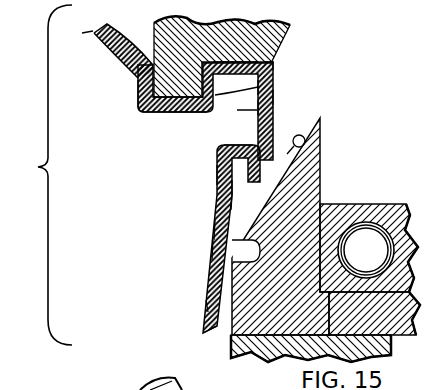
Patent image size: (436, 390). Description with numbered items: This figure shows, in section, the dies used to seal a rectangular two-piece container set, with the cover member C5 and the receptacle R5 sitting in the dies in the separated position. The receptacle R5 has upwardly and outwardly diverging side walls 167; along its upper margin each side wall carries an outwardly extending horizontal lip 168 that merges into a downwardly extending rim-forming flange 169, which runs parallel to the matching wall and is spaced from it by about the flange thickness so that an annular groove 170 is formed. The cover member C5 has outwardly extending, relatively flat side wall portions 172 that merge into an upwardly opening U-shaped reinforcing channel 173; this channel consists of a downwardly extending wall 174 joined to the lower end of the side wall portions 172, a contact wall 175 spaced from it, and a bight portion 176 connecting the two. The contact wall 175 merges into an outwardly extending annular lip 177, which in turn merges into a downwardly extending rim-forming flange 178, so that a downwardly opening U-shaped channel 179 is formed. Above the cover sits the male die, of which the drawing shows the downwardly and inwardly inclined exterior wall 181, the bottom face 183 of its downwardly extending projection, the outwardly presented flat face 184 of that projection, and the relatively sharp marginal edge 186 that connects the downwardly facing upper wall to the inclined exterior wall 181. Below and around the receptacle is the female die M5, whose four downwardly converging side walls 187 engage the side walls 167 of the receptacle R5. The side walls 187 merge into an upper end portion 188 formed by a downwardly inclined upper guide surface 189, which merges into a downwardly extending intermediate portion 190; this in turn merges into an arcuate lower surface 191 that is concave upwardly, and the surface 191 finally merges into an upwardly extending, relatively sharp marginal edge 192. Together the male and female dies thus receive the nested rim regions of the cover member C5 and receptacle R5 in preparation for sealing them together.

The side walls 167 is at (210, 272).
The horizontal lips 168 is at (232, 148).
The rim-forming flanges 169 is at (221, 190).
The annular groove 170 is at (217, 175).
The side wall portions 172 is at (128, 53).
The reinforcing channels 173 is at (140, 101).
The downwardly extending wall 174 is at (137, 86).
The contact wall 175 is at (275, 90).
The bight portion 176 is at (150, 113).
The annular lip 177 is at (274, 70).
The rim-forming flange 178 is at (276, 101).
The U-shaped channel 179 is at (276, 98).
The exterior wall 181 is at (285, 37).
The bottom face 183 is at (181, 109).
The flat face 184 is at (276, 69).
The marginal edge 186 is at (273, 66).
The side walls 187 is at (205, 325).
The upper end portion 188 is at (321, 190).
The upper guide surface 189 is at (305, 140).
The intermediate portion 190 is at (233, 205).
The arcuate lower surface 191 is at (214, 233).
The marginal edge 192 is at (212, 251).
The cover member C5 is at (97, 64).
The female die M5 is at (337, 175).
The receptacle R5 is at (200, 309).